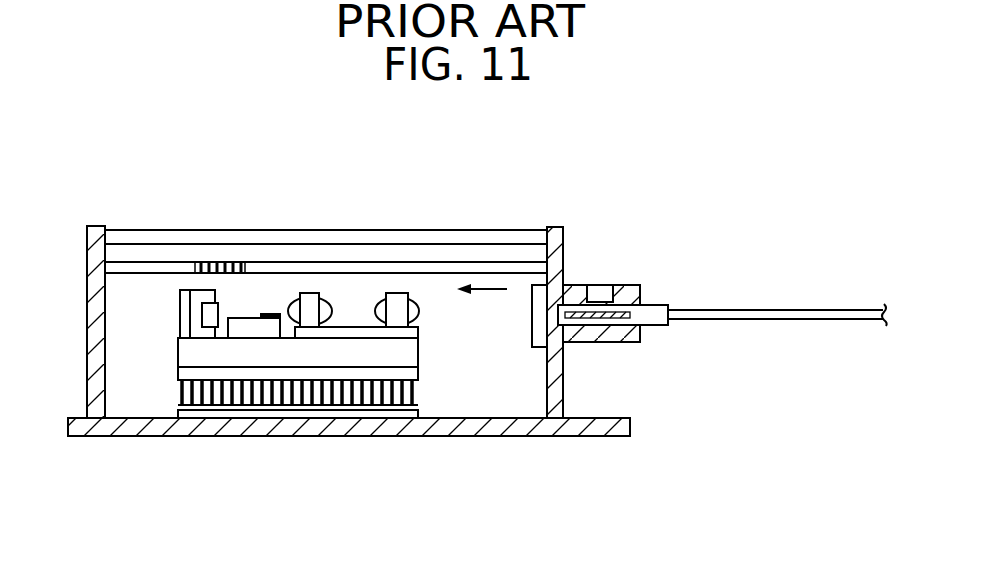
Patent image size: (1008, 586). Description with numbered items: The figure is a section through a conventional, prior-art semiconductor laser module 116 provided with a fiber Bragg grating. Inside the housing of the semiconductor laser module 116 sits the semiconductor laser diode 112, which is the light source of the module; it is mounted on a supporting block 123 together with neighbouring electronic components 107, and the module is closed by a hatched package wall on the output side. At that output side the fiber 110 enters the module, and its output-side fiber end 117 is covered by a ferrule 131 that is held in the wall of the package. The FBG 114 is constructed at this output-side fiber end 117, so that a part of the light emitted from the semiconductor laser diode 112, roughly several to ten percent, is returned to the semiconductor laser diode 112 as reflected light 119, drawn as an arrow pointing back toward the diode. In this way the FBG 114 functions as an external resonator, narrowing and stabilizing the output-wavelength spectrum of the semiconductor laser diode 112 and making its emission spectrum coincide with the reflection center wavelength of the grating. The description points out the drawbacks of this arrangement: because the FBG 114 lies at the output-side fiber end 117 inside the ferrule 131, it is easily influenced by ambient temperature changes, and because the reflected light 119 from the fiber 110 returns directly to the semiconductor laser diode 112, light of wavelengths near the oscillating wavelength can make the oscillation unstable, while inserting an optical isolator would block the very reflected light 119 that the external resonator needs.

The semiconductor laser module 116 is at (96, 214).
The thermoelectric cooler / heat sink block 123 is at (238, 390).
The semiconductor laser diode 112 is at (269, 313).
The electronic components (capacitors) 107 is at (310, 296).
The reflected light 119 is at (497, 290).
The output-side fiber end 117 is at (548, 312).
The FBG 114 is at (595, 285).
The ferrule 131 is at (670, 305).
The fiber 110 is at (793, 309).